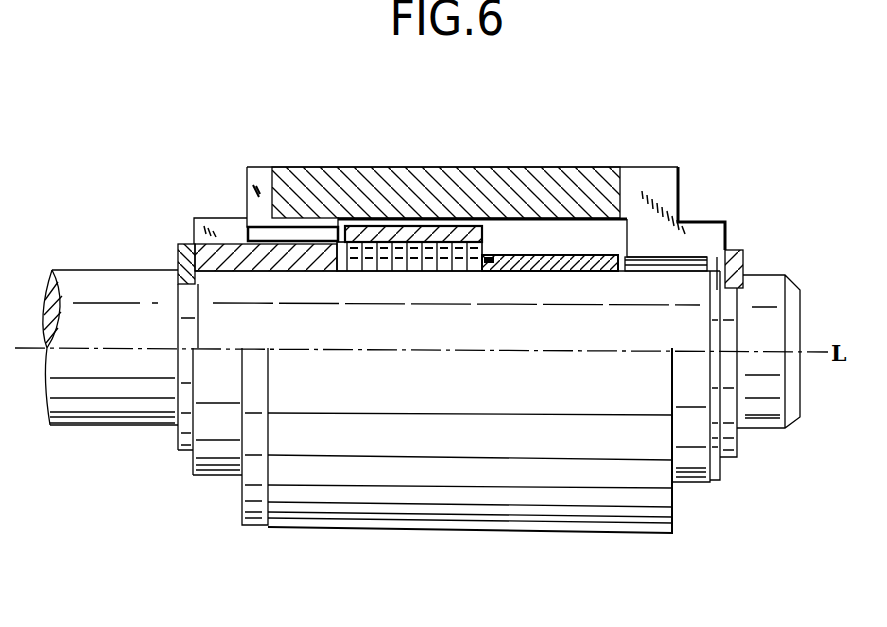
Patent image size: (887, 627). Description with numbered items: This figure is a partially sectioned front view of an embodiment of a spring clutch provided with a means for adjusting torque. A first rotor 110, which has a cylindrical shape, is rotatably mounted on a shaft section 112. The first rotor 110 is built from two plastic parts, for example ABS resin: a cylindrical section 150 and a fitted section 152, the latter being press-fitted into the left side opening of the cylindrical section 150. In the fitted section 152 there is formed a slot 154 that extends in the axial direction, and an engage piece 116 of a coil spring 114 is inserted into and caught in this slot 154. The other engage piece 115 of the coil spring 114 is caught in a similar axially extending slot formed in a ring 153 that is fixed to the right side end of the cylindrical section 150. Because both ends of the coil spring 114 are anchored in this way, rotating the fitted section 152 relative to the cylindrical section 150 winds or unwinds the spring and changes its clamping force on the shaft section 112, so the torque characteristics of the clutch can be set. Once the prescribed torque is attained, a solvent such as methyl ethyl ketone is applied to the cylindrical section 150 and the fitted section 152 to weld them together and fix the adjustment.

The first rotor 110 is at (682, 162).
The shaft section 112 is at (105, 425).
The coil spring 114 is at (542, 250).
The engage piece 115 is at (693, 257).
The engage piece 116 is at (263, 229).
The cylindrical section 150 is at (478, 178).
The fitted section 152 is at (195, 219).
The ring 153 is at (693, 232).
The slot 154 is at (287, 217).